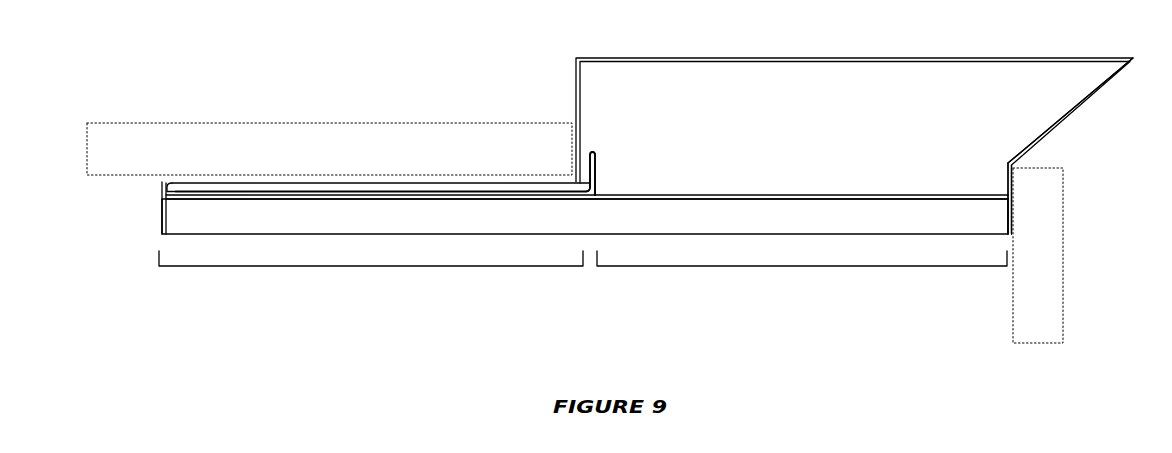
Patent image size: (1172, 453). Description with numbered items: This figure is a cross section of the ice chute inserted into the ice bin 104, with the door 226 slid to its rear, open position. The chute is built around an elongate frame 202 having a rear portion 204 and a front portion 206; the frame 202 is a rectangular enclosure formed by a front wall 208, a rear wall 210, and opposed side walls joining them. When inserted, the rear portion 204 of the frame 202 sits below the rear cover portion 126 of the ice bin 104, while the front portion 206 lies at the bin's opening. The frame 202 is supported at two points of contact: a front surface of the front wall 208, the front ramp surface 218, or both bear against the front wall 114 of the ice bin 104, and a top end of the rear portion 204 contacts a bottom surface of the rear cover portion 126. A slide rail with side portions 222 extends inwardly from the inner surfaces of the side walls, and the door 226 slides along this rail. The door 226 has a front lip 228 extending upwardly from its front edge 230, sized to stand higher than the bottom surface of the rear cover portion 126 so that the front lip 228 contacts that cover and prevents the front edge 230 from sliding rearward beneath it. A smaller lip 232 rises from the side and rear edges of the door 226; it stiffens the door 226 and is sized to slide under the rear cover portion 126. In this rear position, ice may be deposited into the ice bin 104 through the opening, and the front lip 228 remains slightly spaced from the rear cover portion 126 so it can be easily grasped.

The ice bin 104 is at (278, 115).
The front wall of the ice bin 114 is at (1065, 276).
The rear cover portion 126 is at (227, 123).
The frame 202 is at (887, 56).
The rear portion 204 is at (390, 265).
The front portion 206 is at (833, 268).
The front wall 208 is at (1010, 183).
The rear wall 210 is at (165, 220).
The front ramp surface 218 is at (1087, 100).
The side portions of the slide rail 222 is at (815, 194).
The door 226 is at (597, 158).
The front lip 228 is at (588, 156).
The front edge 230 is at (597, 192).
The smaller lip 232 is at (370, 188).